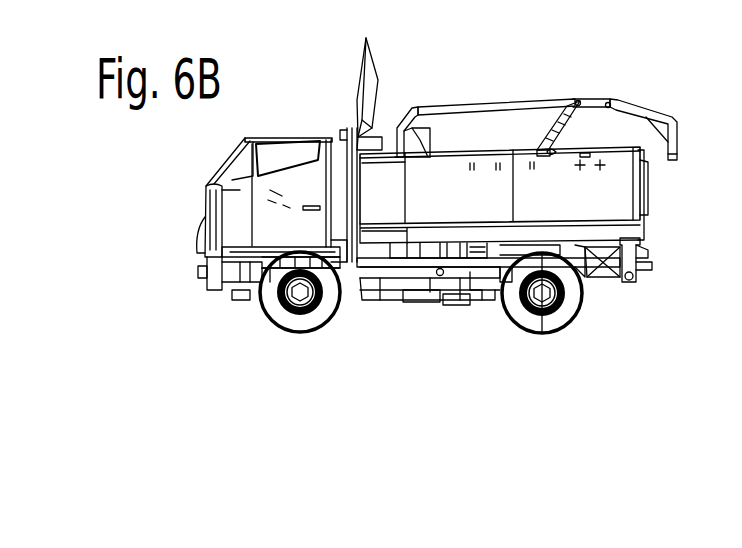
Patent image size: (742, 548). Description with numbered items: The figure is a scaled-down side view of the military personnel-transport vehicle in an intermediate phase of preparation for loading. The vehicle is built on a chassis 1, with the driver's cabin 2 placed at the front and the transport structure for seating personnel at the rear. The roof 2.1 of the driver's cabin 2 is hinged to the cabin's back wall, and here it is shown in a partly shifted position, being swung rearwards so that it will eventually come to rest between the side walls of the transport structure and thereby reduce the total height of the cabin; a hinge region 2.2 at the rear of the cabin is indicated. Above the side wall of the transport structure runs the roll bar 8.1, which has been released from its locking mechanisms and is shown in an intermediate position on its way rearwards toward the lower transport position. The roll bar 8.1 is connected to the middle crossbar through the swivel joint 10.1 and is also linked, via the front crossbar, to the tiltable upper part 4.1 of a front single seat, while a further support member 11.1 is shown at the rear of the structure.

The chassis 1 is at (427, 268).
The driver's cabin 2 is at (201, 191).
The roof 2.1 is at (373, 62).
The cab rear frame 2.2 is at (356, 139).
The upper part of seat 4.1 is at (437, 115).
The roll bar 8.1 is at (505, 105).
The swivel joint 10.1 is at (578, 102).
The rear arch 11.1 is at (617, 102).